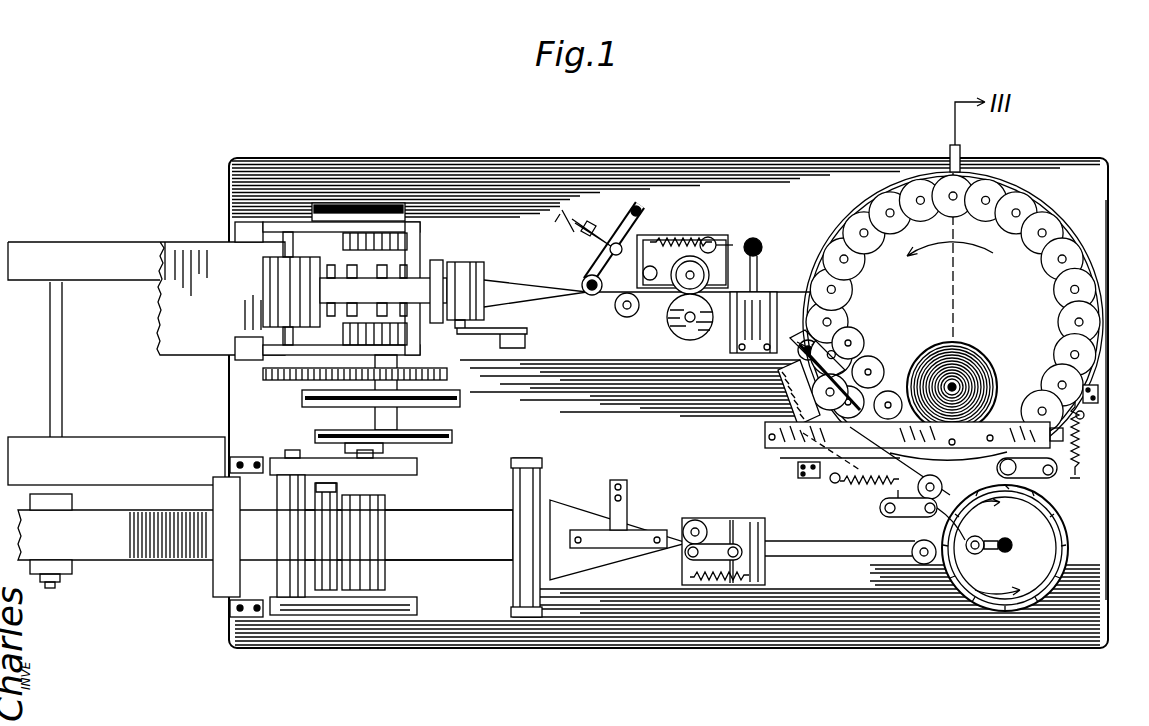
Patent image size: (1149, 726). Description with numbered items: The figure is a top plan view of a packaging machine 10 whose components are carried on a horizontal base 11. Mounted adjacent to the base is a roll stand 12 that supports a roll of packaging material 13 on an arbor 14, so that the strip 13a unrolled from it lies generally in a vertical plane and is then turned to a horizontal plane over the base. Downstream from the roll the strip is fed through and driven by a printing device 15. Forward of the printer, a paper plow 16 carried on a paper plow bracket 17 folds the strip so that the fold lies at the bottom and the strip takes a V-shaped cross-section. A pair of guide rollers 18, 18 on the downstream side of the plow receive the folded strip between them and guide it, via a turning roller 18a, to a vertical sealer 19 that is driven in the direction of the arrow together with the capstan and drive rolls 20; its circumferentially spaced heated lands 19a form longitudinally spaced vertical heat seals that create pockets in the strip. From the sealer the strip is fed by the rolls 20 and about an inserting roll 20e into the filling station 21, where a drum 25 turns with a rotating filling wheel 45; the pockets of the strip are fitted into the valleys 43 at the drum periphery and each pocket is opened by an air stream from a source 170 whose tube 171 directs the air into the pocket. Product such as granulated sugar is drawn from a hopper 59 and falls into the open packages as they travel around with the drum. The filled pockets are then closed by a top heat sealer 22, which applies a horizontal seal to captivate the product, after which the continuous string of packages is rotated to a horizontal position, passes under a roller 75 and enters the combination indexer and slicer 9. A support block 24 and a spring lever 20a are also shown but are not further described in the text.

The combination indexer and slicer 9 is at (453, 257).
The packaging machine 10 is at (601, 657).
The horizontal base 11 is at (1098, 585).
The roll stand 12 is at (70, 432).
The roll of packaging material 13 is at (132, 560).
The strip 13a is at (651, 314).
The arbor 14 is at (48, 590).
The printing device 15 is at (343, 622).
The paper plow 16 is at (580, 515).
The paper plow bracket 17 is at (627, 490).
The guide rollers 18 is at (698, 515).
The turning roller 18a is at (910, 553).
The vertical sealer 19 is at (1000, 612).
The heated lands 19a is at (945, 520).
The capstan and drive rolls 20 is at (871, 513).
The spring lever 20a is at (691, 231).
The inserting roll 20e is at (790, 400).
The filling station 21 is at (984, 295).
The top heat sealer 22 is at (768, 279).
The housing block 24 is at (213, 246).
The drum 25 is at (846, 365).
The valleys 43 is at (852, 330).
The rotating filling wheel 45 is at (1026, 256).
The hopper 59 is at (983, 372).
The roller 75 is at (482, 272).
The air stream source 170 is at (797, 360).
The tube 171 is at (850, 330).